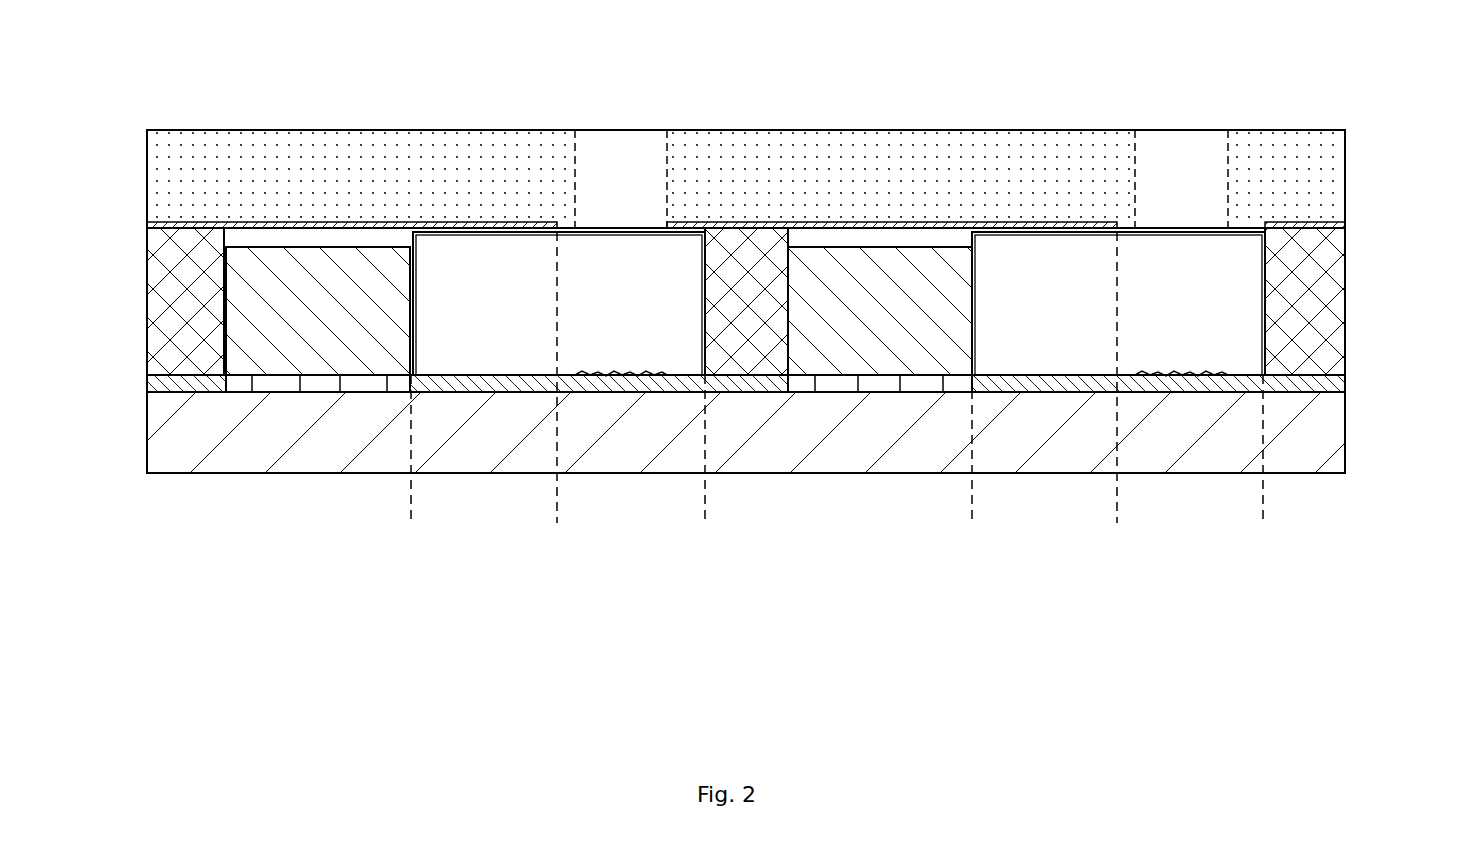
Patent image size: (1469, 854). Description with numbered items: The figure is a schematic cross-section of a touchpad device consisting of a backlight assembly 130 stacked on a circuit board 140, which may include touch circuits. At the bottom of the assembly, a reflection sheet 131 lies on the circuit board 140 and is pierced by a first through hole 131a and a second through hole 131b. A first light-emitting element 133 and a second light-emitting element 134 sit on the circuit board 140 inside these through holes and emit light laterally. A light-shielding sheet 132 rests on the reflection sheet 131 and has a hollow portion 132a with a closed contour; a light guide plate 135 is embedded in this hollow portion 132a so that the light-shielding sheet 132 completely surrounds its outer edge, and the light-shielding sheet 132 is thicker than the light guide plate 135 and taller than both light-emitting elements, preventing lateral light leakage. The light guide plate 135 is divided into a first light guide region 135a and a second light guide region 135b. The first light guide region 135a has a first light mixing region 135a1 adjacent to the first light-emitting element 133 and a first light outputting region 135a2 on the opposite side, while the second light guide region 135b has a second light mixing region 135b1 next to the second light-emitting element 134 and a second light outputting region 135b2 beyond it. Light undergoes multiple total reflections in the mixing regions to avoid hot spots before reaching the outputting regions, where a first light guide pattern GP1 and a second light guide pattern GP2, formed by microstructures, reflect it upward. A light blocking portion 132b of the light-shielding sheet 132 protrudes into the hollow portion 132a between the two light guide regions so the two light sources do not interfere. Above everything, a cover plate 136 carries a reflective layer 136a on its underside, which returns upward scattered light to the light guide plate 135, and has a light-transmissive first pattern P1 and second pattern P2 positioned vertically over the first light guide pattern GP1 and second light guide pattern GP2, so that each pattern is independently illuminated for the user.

The backlight assembly 130 is at (140, 130).
The reflection sheet 131 is at (1340, 386).
The first through hole 131a is at (240, 393).
The second through hole 131b is at (958, 393).
The light-shielding sheet 132 is at (1337, 300).
The hollow portion 132a is at (265, 240).
The light blocking portion 132b is at (750, 352).
The first light-emitting element 133 is at (330, 360).
The second light-emitting element 134 is at (840, 350).
The light guide plate 135 is at (442, 265).
The first light guide region 135a is at (673, 573).
The first light mixing region 135a1 is at (557, 523).
The first light outputting region 135a2 is at (705, 523).
The second light guide region 135b is at (1232, 573).
The second light mixing region 135b1 is at (1117, 523).
The second light outputting region 135b2 is at (1263, 523).
The cover plate 136 is at (1345, 174).
The reflective layer 136a is at (1345, 228).
The circuit board 140 is at (1335, 431).
The first pattern P1 is at (619, 147).
The second pattern P2 is at (1178, 147).
The first light guide pattern GP1 is at (630, 377).
The second light guide pattern GP2 is at (1190, 377).